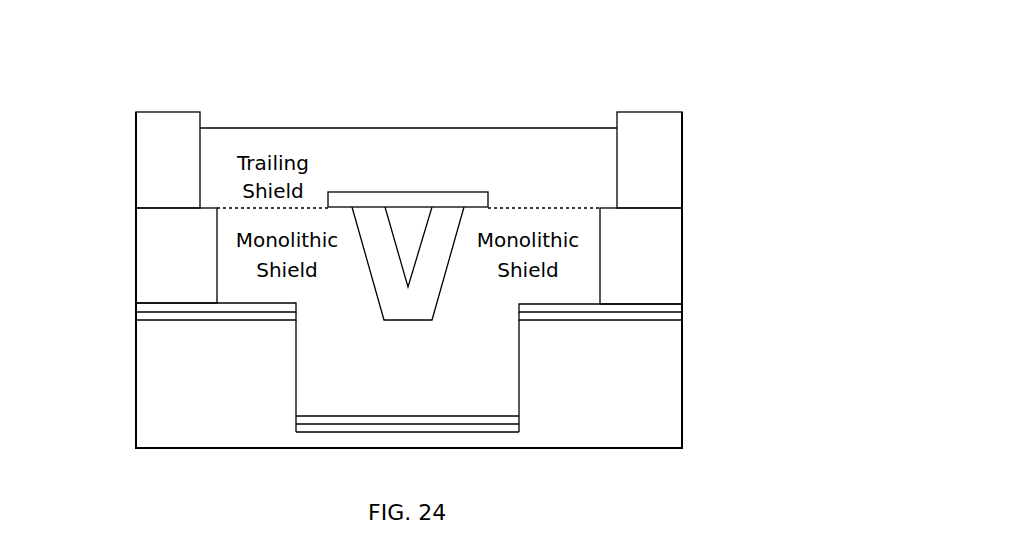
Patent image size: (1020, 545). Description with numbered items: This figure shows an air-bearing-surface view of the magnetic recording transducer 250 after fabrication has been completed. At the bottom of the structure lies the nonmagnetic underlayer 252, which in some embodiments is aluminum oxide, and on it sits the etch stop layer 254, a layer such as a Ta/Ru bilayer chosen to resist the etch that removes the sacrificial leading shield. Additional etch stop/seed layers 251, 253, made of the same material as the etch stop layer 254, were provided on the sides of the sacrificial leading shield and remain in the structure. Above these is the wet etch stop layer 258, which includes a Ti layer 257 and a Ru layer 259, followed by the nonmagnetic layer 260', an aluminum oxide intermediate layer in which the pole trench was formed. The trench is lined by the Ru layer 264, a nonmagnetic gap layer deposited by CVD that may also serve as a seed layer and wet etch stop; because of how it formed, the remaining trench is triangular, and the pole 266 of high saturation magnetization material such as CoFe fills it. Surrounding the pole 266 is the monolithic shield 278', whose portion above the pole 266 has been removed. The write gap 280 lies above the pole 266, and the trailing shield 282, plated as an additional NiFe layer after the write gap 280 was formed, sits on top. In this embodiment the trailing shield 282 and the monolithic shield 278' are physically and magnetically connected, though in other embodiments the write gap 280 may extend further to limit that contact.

The transducer 250 is at (427, 58).
The trailing shield 282 is at (233, 128).
The write gap 280 is at (375, 192).
The pole 266 is at (407, 192).
The Ru layer 264 is at (447, 192).
The monolithic shield 278' is at (424, 146).
The nonmagnetic layer 260' is at (409, 234).
The Ru layer 259 is at (135, 307).
The Ti layer 257 is at (135, 317).
The wet etch stop layer 258 is at (70, 303).
The etch stop/seed layer 253 is at (296, 408).
The etch stop layer 254 is at (409, 444).
The nonmagnetic underlayer 252 is at (568, 449).
The etch stop/seed layer 251 is at (519, 424).